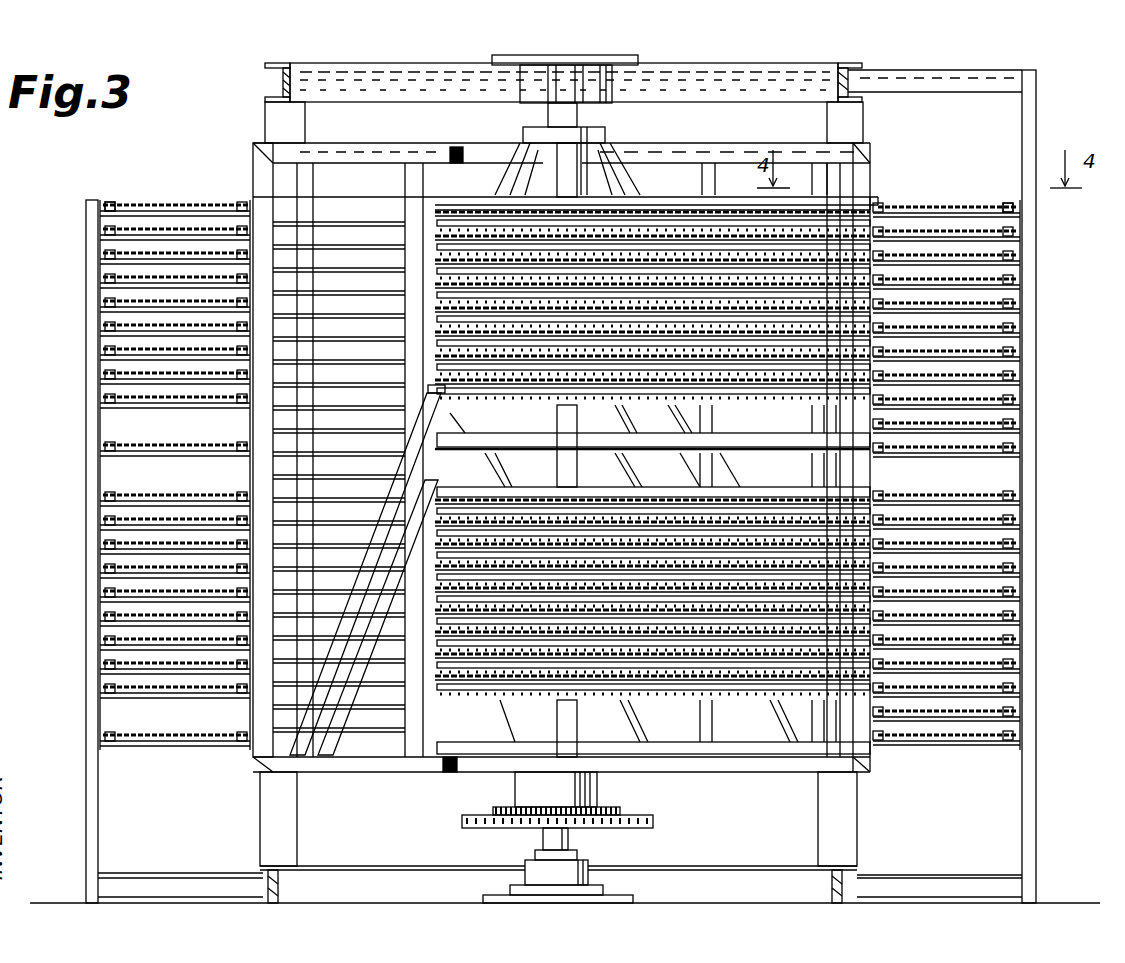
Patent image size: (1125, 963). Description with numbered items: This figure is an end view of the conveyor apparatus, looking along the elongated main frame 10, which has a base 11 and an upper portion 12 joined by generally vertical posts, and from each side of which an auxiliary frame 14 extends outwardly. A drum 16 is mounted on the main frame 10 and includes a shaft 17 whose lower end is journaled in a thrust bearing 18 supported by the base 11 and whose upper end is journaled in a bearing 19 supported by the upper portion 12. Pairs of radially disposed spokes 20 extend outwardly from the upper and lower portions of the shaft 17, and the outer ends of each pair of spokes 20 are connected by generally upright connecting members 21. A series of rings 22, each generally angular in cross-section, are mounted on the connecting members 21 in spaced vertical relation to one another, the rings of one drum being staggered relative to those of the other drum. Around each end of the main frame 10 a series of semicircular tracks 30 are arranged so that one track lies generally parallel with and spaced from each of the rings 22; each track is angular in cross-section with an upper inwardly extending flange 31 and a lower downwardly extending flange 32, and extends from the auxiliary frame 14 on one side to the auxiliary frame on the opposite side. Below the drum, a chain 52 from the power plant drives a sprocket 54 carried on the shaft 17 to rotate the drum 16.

The main frame 10 is at (258, 113).
The base 11 is at (375, 878).
The upper portion 12 is at (407, 58).
The auxiliary frame 14 is at (95, 411).
The drum 16 is at (697, 118).
The shaft 17 is at (552, 114).
The thrust bearing 18 is at (538, 866).
The bearing 19 is at (594, 76).
The radial spokes 20 is at (449, 152).
The connecting members 21 is at (255, 153).
The rings 22 is at (253, 193).
The semicircular tracks 30 is at (100, 314).
The upper inwardly extending flange 31 is at (128, 236).
The lower downwardly extending flange 32 is at (100, 218).
The chain 52 is at (477, 800).
The sprocket 54 is at (503, 827).